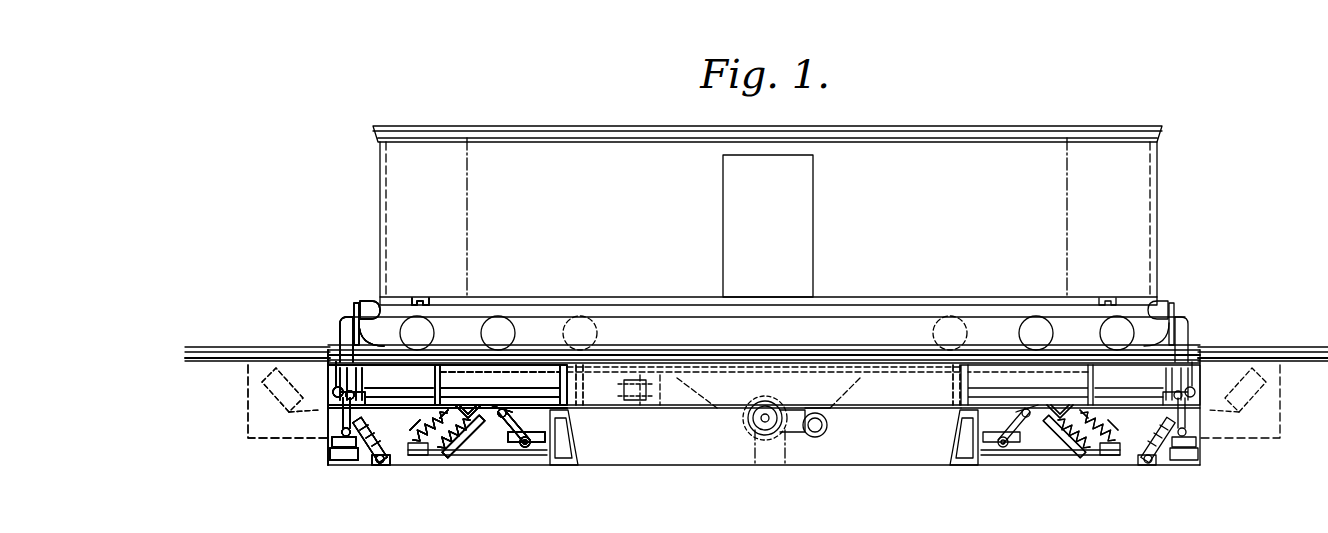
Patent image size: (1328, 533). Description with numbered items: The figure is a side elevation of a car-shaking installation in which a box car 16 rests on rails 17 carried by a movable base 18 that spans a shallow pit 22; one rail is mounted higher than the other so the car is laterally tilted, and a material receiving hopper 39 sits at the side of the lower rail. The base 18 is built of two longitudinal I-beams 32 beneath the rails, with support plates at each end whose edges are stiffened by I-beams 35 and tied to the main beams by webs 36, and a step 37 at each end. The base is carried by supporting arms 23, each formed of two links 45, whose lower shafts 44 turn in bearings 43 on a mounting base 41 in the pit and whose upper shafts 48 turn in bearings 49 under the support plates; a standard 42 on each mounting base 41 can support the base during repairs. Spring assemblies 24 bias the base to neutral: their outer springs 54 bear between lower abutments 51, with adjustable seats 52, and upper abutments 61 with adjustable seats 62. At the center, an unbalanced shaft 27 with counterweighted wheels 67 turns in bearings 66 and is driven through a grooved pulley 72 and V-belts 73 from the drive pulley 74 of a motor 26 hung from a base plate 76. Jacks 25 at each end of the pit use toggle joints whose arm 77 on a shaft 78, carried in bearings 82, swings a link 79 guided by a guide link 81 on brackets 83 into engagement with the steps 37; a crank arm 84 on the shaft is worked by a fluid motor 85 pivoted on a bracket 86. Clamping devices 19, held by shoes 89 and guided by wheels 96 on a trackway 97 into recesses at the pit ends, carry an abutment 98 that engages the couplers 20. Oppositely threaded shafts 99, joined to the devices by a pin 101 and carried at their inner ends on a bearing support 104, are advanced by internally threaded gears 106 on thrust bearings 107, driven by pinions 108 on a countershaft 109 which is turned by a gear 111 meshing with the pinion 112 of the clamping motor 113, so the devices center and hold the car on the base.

The box car 16 is at (928, 126).
The rails 17 is at (810, 348).
The movable base or platform 18 is at (890, 414).
The clamping devices 19 is at (424, 294).
The couplers 20 is at (362, 300).
The pit 22 is at (646, 462).
The supporting arms 23 is at (504, 434).
The spring assemblies 24 is at (420, 430).
The jacks 25 is at (370, 448).
The motor 26 is at (820, 438).
The unbalanced shaft 27 is at (760, 432).
The I-beams 32 is at (915, 410).
The I-beams 35 is at (432, 394).
The webs 36 is at (436, 384).
The step 37 is at (364, 388).
The material receiving hopper 39 is at (706, 418).
The mounting base 41 is at (500, 458).
The standard 42 is at (578, 456).
The bearings 43 is at (540, 454).
The shafts 44 is at (523, 435).
The links 45 is at (531, 448).
The shafts 48 is at (505, 410).
The bearings 49 is at (498, 410).
The abutments 51 is at (440, 452).
The adjustable seat 52 is at (1106, 452).
The outer springs 54 is at (425, 421).
The abutments 61 is at (466, 405).
The adjustable seat 62 is at (481, 456).
The bearings 66 is at (776, 410).
The counterweighted wheels 67 is at (746, 426).
The multiple grooved pulley 72 is at (756, 456).
The V-belts 73 is at (790, 456).
The drive pulley 74 is at (828, 430).
The base plate 76 is at (836, 418).
The arm 77 is at (340, 422).
The shaft 78 is at (344, 437).
The link 79 is at (318, 412).
The guide link 81 is at (334, 386).
The bearings 82 is at (344, 452).
The brackets 83 is at (336, 398).
The crank arm 84 is at (362, 430).
The fluid motor 85 is at (380, 464).
The bracket 86 is at (386, 462).
The shoes 89 is at (396, 370).
The wheels 96 is at (300, 410).
The trackway 97 is at (340, 362).
The abutment 98 is at (352, 316).
The threaded shafts 99 is at (544, 360).
The pin 101 is at (440, 380).
The bearing support 104 is at (652, 360).
The gear 106 is at (598, 335).
The thrust bearing 107 is at (580, 333).
The pinions 108 is at (582, 406).
The countershaft 109 is at (704, 386).
The gear 111 is at (670, 388).
The pinion 112 is at (648, 392).
The clamping motor 113 is at (631, 402).